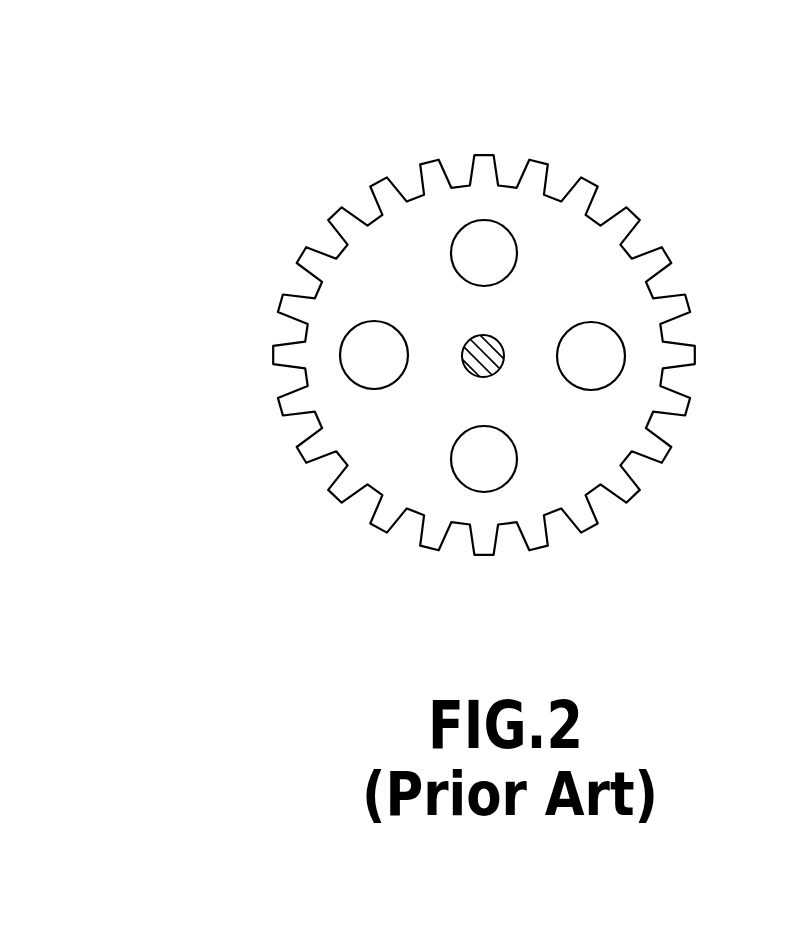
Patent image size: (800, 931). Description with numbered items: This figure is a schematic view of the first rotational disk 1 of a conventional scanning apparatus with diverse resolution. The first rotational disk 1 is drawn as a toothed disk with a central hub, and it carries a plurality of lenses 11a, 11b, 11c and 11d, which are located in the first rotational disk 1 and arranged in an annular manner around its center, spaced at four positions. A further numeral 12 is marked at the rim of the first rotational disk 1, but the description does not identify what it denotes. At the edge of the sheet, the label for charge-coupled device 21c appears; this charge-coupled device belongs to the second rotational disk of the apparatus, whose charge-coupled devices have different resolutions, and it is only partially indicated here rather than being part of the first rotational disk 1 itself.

The first rotational disk 1 is at (484, 299).
The lens 11a is at (467, 253).
The lens 11b is at (595, 361).
The lens 11c is at (472, 459).
The lens 11d is at (373, 348).
The gear teeth 12 is at (287, 357).
The charge-coupled device 21c is at (781, 452).